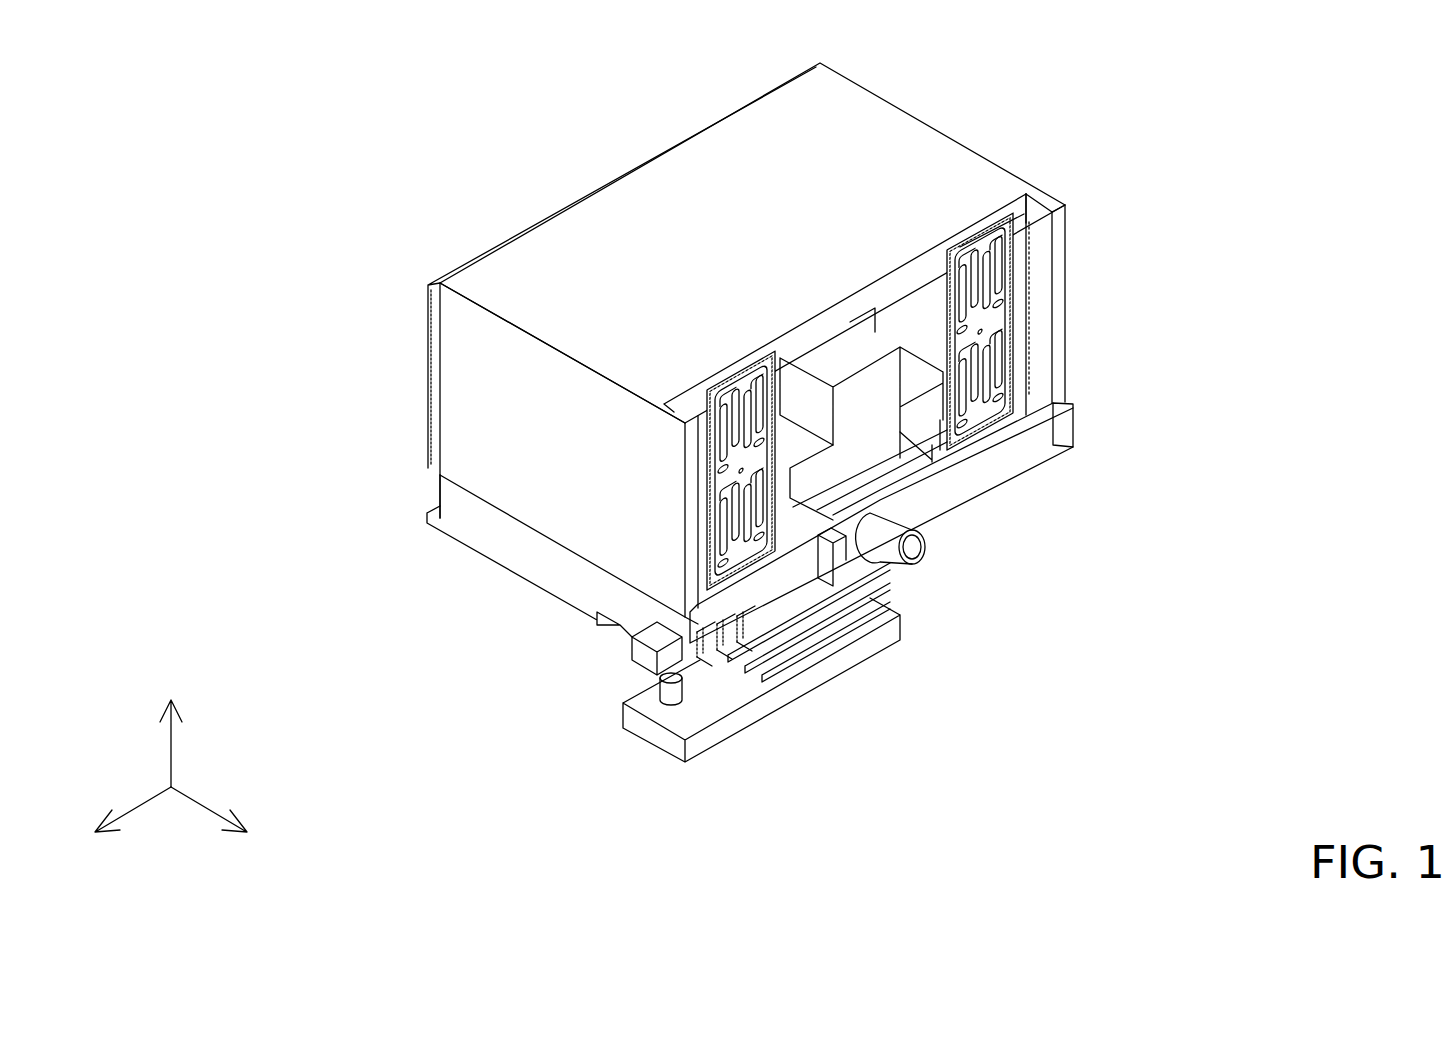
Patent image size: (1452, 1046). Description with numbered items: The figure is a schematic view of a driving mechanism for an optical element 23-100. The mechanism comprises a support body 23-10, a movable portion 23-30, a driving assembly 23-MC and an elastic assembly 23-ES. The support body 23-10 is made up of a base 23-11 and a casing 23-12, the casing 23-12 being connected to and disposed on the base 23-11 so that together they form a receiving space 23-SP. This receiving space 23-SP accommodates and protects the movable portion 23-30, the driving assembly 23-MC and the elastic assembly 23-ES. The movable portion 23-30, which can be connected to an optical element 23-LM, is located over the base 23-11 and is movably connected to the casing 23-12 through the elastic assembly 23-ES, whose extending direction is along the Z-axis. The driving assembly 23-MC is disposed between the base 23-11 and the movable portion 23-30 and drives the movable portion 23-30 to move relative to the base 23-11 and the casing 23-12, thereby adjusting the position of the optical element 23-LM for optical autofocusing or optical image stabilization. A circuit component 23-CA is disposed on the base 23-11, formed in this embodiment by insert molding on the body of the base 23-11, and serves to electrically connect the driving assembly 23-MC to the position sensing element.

The driving mechanism for an optical element 23-100 is at (415, 78).
The support body 23-10 is at (300, 340).
The casing 23-12 is at (485, 415).
The base 23-11 is at (483, 527).
The optical element 23-LM is at (433, 328).
The receiving space 23-SP is at (1042, 300).
The elastic assembly 23-ES is at (983, 427).
The movable portion 23-30 is at (892, 437).
The driving assembly 23-MC is at (845, 495).
The circuit component 23-CA is at (707, 710).